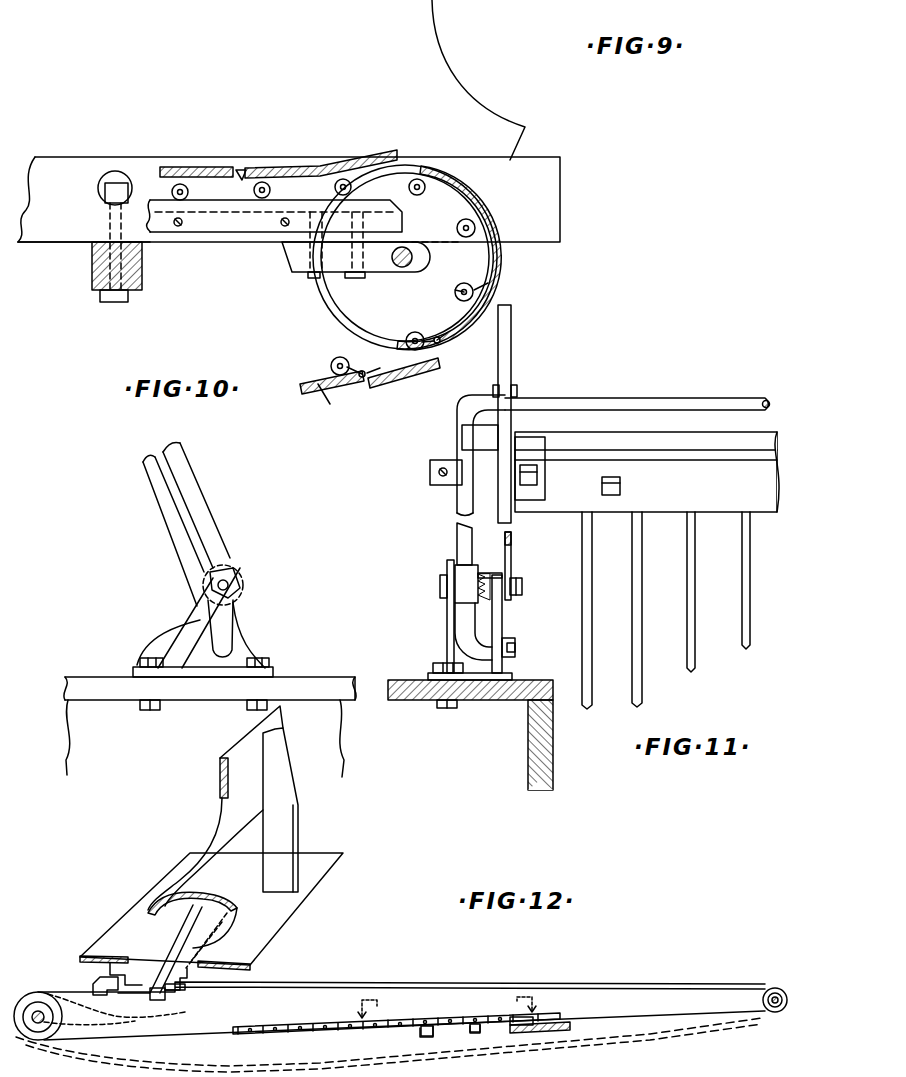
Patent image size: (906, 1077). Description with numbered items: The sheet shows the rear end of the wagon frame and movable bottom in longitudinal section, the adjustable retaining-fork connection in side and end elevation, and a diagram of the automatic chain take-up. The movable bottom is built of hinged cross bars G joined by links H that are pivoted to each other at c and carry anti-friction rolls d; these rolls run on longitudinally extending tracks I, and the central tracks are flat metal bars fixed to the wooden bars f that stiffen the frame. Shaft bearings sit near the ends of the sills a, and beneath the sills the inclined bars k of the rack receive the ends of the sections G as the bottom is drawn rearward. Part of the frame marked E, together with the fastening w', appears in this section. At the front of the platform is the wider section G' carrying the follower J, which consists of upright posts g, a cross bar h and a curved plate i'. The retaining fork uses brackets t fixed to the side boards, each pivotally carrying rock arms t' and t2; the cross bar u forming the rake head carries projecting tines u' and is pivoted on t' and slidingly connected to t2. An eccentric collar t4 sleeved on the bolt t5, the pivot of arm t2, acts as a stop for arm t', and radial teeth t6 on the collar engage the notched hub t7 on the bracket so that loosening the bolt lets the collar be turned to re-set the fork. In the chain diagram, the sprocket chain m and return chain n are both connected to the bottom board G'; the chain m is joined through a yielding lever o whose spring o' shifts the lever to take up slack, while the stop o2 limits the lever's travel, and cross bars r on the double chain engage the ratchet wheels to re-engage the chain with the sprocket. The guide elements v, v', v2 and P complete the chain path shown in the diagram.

In FIG. 9, the frame plate E is at (422, 38).
In FIG. 10, the frame plate E is at (210, 688).
In FIG. 11, the frame plate E is at (520, 747).
In FIG. 12, the frame plate E is at (327, 743).
In FIG. 9, the sill a is at (553, 193).
In FIG. 9, the longitudinally extending wooden bar f is at (66, 232).
In FIG. 9, the bolt w' is at (128, 243).
In FIG. 9, the track I is at (245, 205).
In FIG. 9, the inclined bar k is at (412, 262).
In FIG. 9, the cross bar G is at (330, 255).
In FIG. 12, the cross bar G is at (540, 1046).
In FIG. 9, the follower J is at (335, 300).
In FIG. 12, the follower J is at (205, 854).
In FIG. 9, the anti-friction roll d is at (197, 203).
In FIG. 9, the pivot c is at (345, 345).
In FIG. 9, the link H is at (366, 382).
In FIG. 10, the rock arm t' is at (183, 561).
In FIG. 11, the rock arm t' is at (584, 466).
In FIG. 10, the rock arm t2 is at (261, 539).
In FIG. 11, the rock arm t2 is at (556, 565).
In FIG. 10, the eccentric collar t4 is at (240, 570).
In FIG. 11, the eccentric collar t4 is at (466, 578).
In FIG. 10, the bolt t5 is at (232, 583).
In FIG. 11, the bolt t5 is at (523, 588).
In FIG. 10, the bracket t is at (212, 655).
In FIG. 11, the bracket t is at (485, 626).
In FIG. 11, the radial teeth t6 is at (404, 608).
In FIG. 11, the notched hub t7 is at (429, 643).
In FIG. 11, the cross bar u is at (618, 455).
In FIG. 11, the tine u' is at (666, 610).
In FIG. 12, the upright post g is at (283, 843).
In FIG. 12, the guide plate i' is at (276, 762).
In FIG. 12, the cross bar h is at (233, 772).
In FIG. 12, the spring o' is at (177, 902).
In FIG. 12, the lever o is at (156, 948).
In FIG. 12, the stop o2 is at (160, 996).
In FIG. 12, the wider section G' is at (215, 921).
In FIG. 12, the sprocket chain m is at (82, 996).
In FIG. 12, the pulley v is at (389, 1027).
In FIG. 12, the chain guide v' is at (354, 1020).
In FIG. 12, the return chain n is at (621, 978).
In FIG. 12, the end pulley v2 is at (781, 988).
In FIG. 12, the stop P is at (430, 1023).
In FIG. 12, the cross bar r is at (475, 1033).